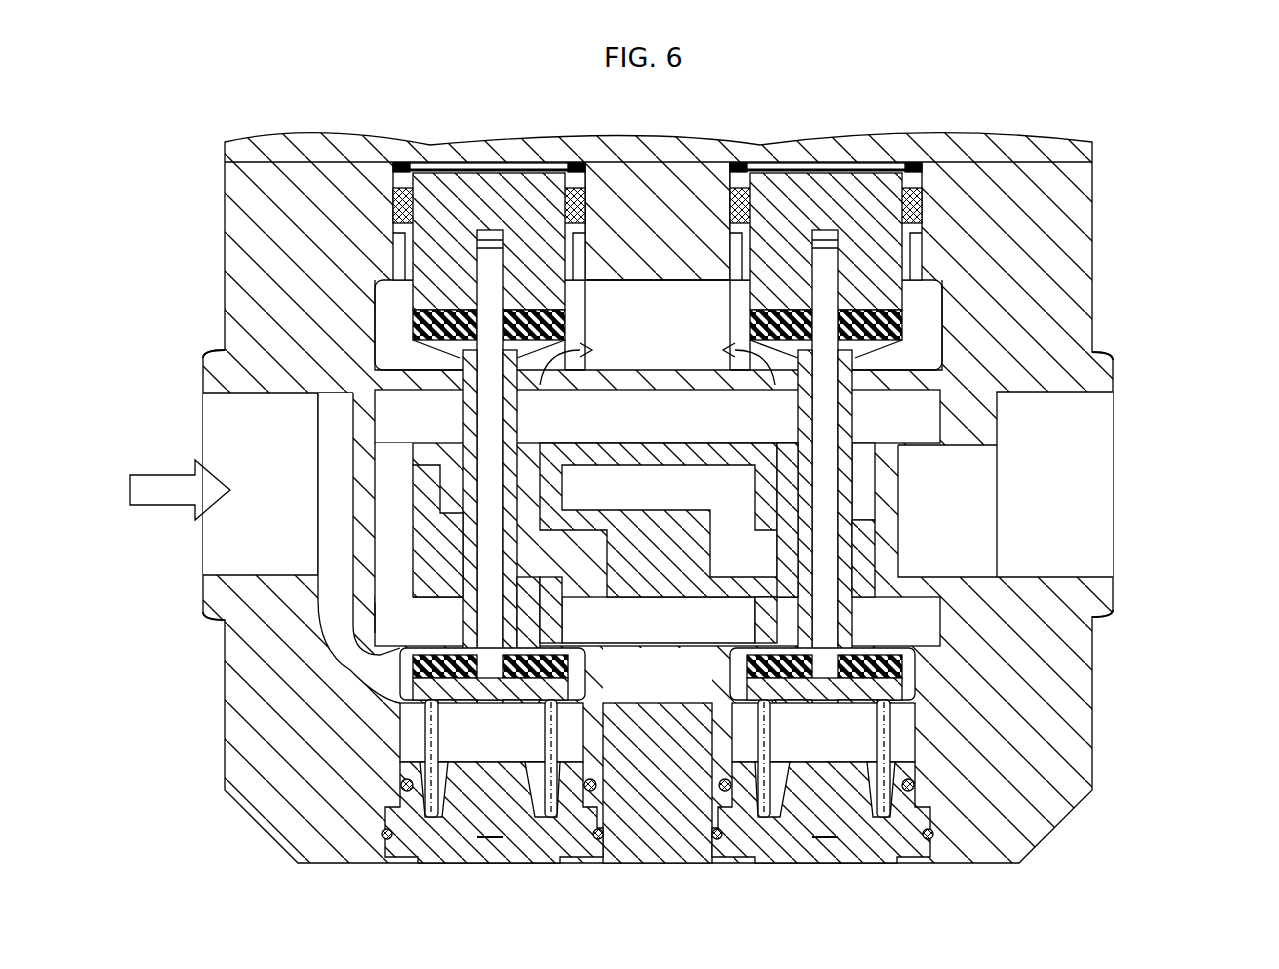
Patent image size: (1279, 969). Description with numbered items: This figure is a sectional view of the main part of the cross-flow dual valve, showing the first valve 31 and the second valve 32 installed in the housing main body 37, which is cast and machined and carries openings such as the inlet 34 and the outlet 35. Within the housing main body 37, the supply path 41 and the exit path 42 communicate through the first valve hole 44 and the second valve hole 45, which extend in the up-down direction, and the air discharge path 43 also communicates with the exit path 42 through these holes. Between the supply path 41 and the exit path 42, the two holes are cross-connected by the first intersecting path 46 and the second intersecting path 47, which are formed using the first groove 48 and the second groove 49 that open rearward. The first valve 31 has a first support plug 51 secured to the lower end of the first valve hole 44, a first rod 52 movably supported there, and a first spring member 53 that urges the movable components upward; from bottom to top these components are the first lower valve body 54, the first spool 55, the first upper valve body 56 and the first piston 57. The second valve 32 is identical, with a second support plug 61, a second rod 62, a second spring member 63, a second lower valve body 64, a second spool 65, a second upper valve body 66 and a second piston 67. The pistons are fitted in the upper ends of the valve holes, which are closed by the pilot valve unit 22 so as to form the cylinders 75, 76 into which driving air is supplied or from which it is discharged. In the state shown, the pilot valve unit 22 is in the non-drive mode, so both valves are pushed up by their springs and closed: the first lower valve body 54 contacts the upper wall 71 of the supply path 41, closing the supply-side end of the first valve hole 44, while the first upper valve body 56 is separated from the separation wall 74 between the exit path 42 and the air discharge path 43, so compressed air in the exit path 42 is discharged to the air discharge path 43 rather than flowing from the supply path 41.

The pilot valve unit 22 is at (1095, 150).
The first valve 31 is at (352, 457).
The second valve 32 is at (972, 457).
The inlet 34 is at (210, 572).
The outlet 35 is at (1113, 570).
The housing main body 37 is at (280, 815).
The supply path 41 is at (640, 680).
The exit path 42 is at (455, 445).
The air discharge path 43 is at (407, 322).
The first valve hole 44 is at (400, 355).
The second valve hole 45 is at (858, 480).
The first intersecting path 46 is at (590, 490).
The second intersecting path 47 is at (690, 620).
The first groove 48 is at (640, 500).
The second groove 49 is at (657, 620).
The first support plug 51 is at (465, 860).
The first rod 52 is at (420, 740).
The first spring member 53 is at (410, 700).
The first lower valve body 54 is at (415, 665).
The first spool 55 is at (460, 555).
The first upper valve body 56 is at (398, 262).
The first piston 57 is at (400, 195).
The second support plug 61 is at (860, 860).
The second rod 62 is at (900, 742).
The second spring member 63 is at (905, 703).
The second lower valve body 64 is at (905, 665).
The second spool 65 is at (865, 555).
The second upper valve body 66 is at (900, 322).
The second piston 67 is at (915, 235).
The upper wall 71 is at (605, 700).
The separation wall 74 is at (680, 380).
The cylinder 75 is at (400, 240).
The cylinder 76 is at (920, 290).